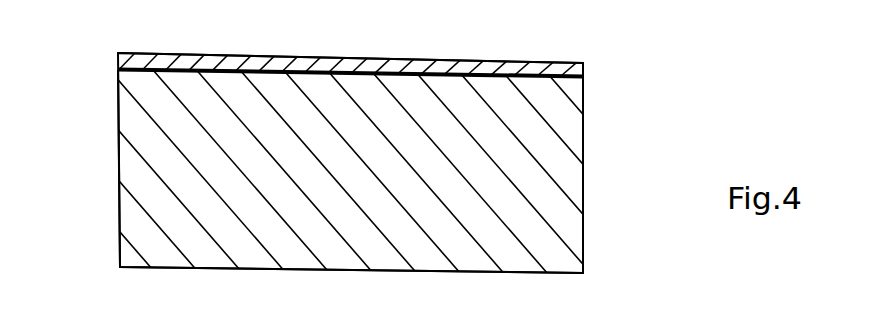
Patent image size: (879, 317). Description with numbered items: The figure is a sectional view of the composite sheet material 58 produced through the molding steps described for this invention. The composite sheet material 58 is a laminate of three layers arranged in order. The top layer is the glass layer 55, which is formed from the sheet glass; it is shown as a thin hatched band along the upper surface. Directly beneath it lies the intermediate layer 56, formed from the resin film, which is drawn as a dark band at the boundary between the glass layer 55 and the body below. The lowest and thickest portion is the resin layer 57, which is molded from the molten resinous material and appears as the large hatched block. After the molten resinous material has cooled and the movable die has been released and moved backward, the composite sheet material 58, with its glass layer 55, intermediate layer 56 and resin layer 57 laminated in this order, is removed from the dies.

The glass layer 55 is at (423, 63).
The intermediate layer 56 is at (152, 68).
The resin layer 57 is at (138, 177).
The composite sheet material 58 is at (606, 77).